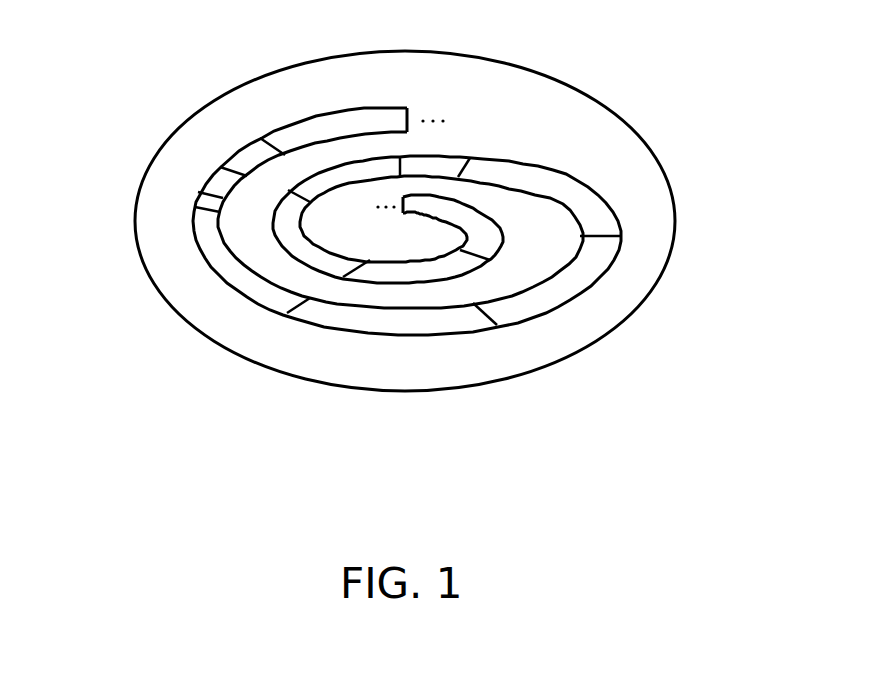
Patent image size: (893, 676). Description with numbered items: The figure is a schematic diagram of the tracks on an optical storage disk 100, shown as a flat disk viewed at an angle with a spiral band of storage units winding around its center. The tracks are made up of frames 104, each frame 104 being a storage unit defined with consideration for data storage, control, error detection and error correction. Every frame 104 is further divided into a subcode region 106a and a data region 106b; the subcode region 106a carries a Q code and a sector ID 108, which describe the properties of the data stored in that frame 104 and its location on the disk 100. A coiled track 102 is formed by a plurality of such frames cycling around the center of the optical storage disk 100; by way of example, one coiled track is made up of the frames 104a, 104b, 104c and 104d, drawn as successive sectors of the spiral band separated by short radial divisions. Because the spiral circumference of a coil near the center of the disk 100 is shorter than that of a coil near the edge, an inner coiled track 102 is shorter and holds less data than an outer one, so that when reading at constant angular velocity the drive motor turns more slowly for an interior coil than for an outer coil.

The optical storage disk 100 is at (222, 423).
The coiled track 102 is at (590, 182).
The frame 104 is at (327, 30).
The frame 104a is at (453, 213).
The frame 104b is at (390, 270).
The frame 104c is at (300, 239).
The frame 104d is at (380, 157).
The subcode region 106a is at (253, 127).
The data region 106b is at (383, 100).
The sector ID 108 is at (230, 183).